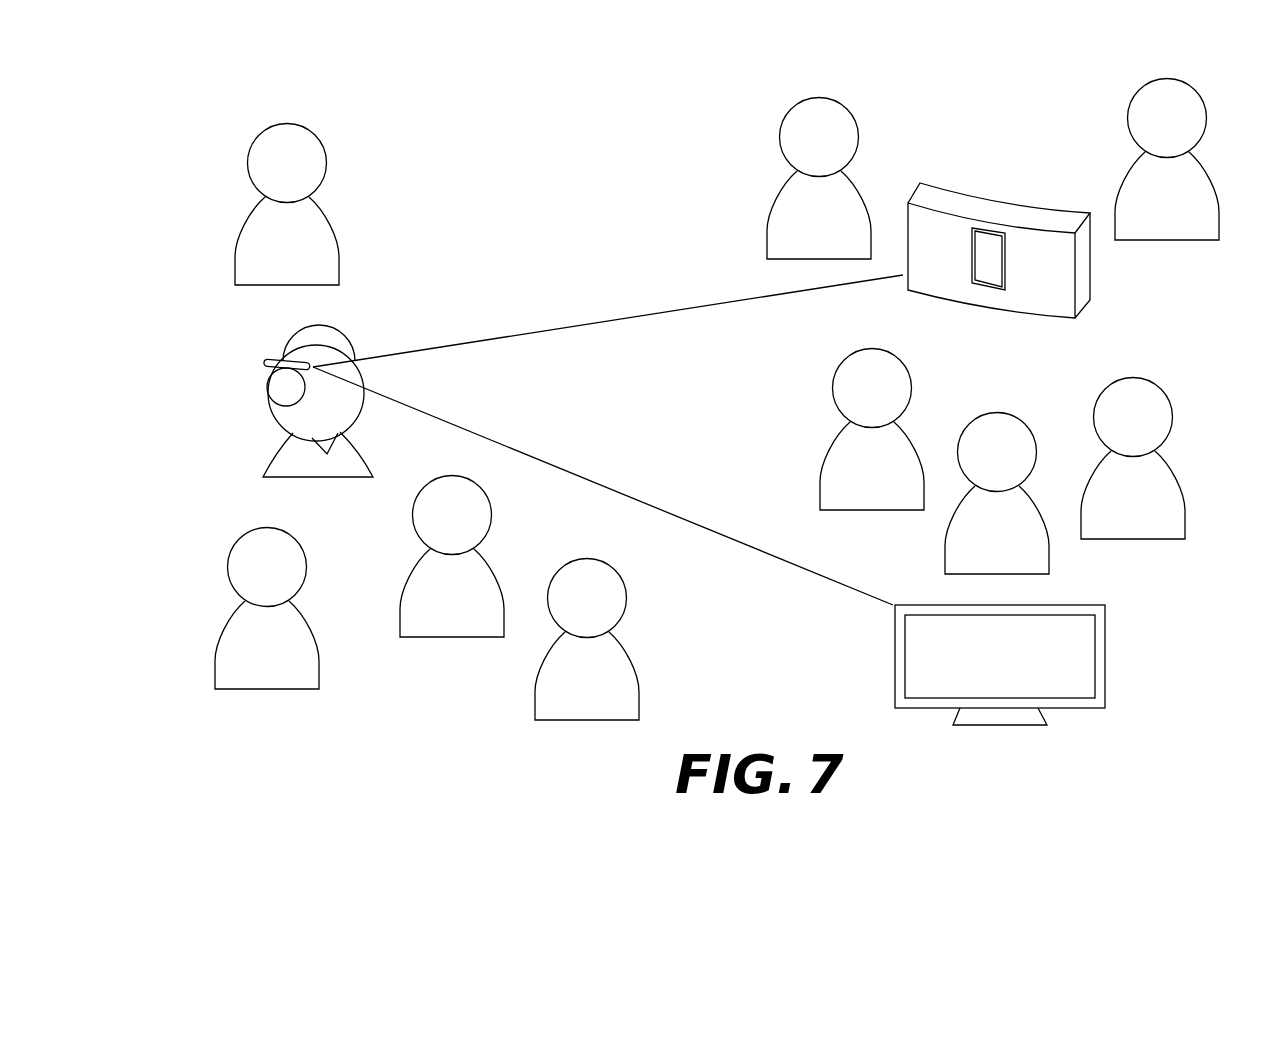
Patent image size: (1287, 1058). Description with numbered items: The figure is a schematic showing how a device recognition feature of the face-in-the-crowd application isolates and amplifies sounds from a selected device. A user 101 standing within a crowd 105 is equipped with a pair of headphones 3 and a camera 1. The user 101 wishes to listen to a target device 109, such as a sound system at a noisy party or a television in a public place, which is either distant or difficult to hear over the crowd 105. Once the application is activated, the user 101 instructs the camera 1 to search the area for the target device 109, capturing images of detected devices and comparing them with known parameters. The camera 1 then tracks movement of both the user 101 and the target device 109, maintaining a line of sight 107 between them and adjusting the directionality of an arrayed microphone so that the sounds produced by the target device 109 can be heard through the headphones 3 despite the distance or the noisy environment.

The camera 1 is at (263, 362).
The pair of headphones 3 is at (268, 390).
The user 101 is at (263, 477).
The crowd 105 is at (318, 136).
The line of sight 107 is at (600, 323).
The target device 109 is at (1092, 290).